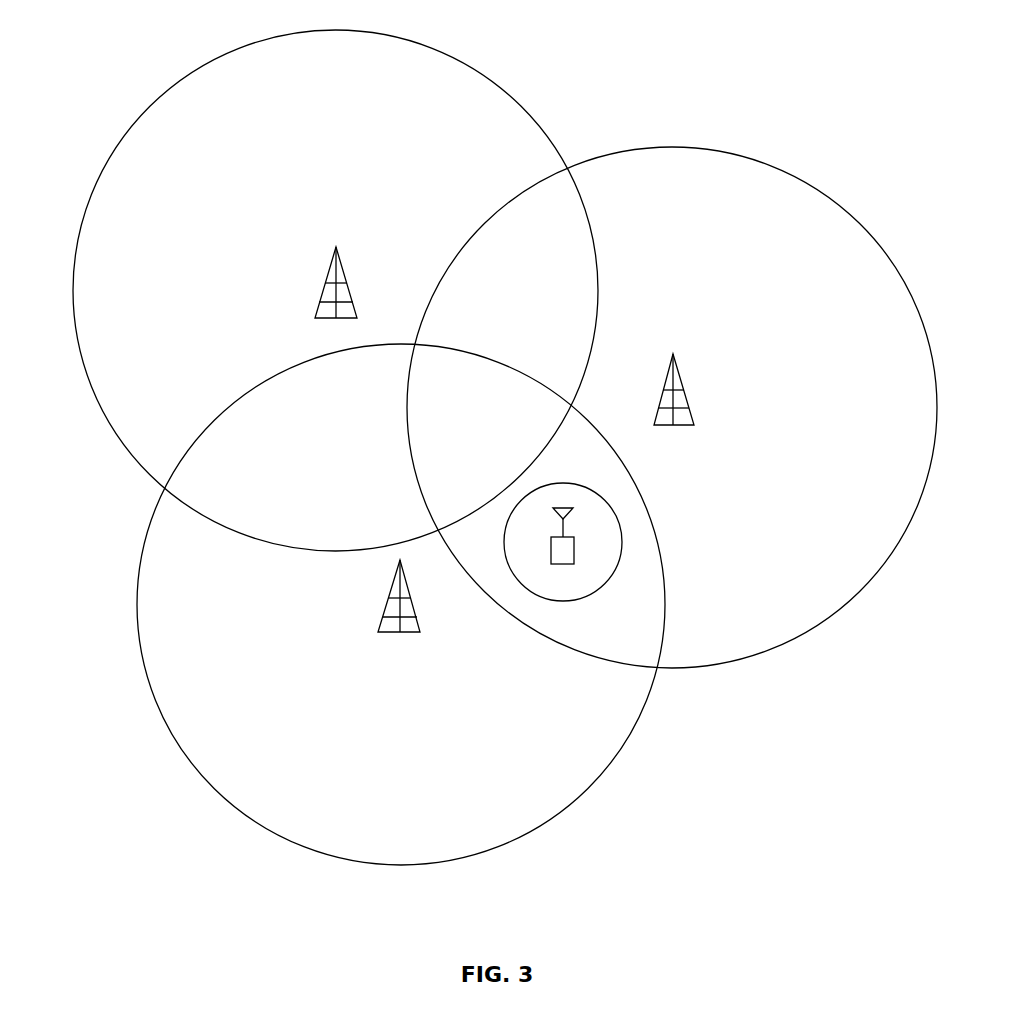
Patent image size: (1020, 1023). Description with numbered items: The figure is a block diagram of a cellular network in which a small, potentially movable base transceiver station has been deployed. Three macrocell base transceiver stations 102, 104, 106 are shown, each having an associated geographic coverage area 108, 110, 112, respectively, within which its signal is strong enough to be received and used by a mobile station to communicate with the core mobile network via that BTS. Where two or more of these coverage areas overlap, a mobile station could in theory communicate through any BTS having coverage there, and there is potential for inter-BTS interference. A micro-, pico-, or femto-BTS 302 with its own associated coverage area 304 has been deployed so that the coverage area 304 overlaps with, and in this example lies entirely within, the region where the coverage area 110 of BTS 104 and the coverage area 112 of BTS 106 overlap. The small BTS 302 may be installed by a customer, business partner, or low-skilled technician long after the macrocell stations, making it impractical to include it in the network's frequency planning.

The base transceiver station 102 is at (325, 283).
The base transceiver station 104 is at (684, 390).
The base transceiver station 106 is at (399, 632).
The coverage area 108 is at (433, 48).
The coverage area 110 is at (793, 175).
The coverage area 112 is at (400, 866).
The micro-, pico-, or femto-BTS 302 is at (574, 546).
The coverage area 304 is at (595, 590).